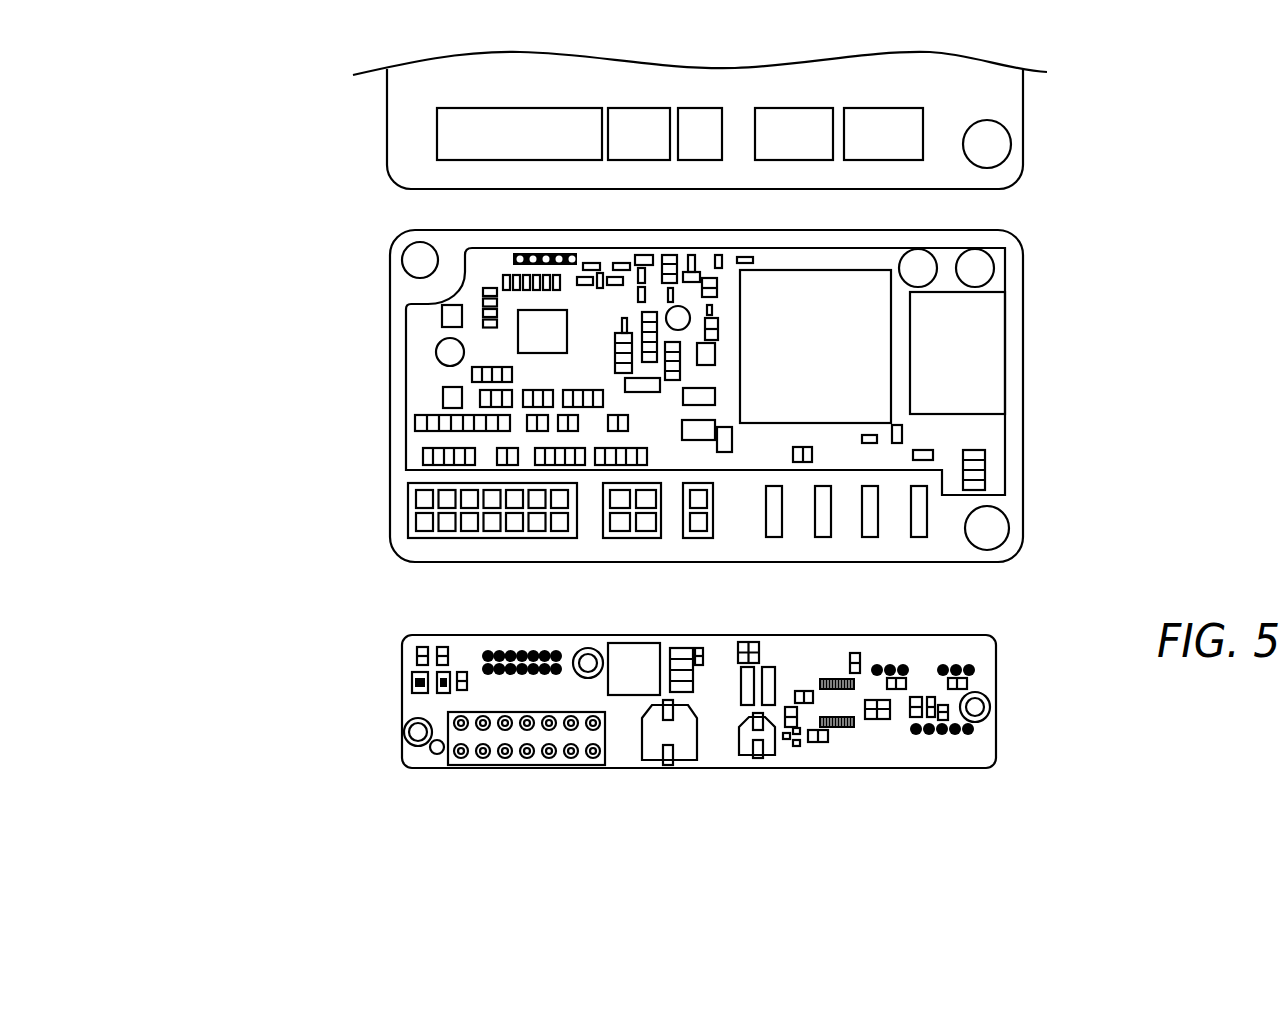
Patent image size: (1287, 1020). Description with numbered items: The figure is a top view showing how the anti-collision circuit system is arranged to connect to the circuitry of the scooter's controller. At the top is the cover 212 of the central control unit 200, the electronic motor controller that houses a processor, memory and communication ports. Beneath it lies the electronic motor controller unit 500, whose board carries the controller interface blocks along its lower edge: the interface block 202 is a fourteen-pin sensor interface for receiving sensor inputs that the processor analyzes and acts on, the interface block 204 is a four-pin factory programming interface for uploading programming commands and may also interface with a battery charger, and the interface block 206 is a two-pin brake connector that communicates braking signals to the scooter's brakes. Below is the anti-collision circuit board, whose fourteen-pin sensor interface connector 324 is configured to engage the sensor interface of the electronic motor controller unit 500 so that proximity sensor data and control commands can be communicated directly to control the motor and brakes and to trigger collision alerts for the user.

The central control unit 200 is at (236, 193).
The cover 212 is at (1023, 123).
The electronic motor controller unit 500 is at (423, 357).
The interface block 202 is at (408, 511).
The interface block 204 is at (622, 538).
The interface block 206 is at (696, 538).
The 14-pin sensor interface connector 324 is at (532, 765).